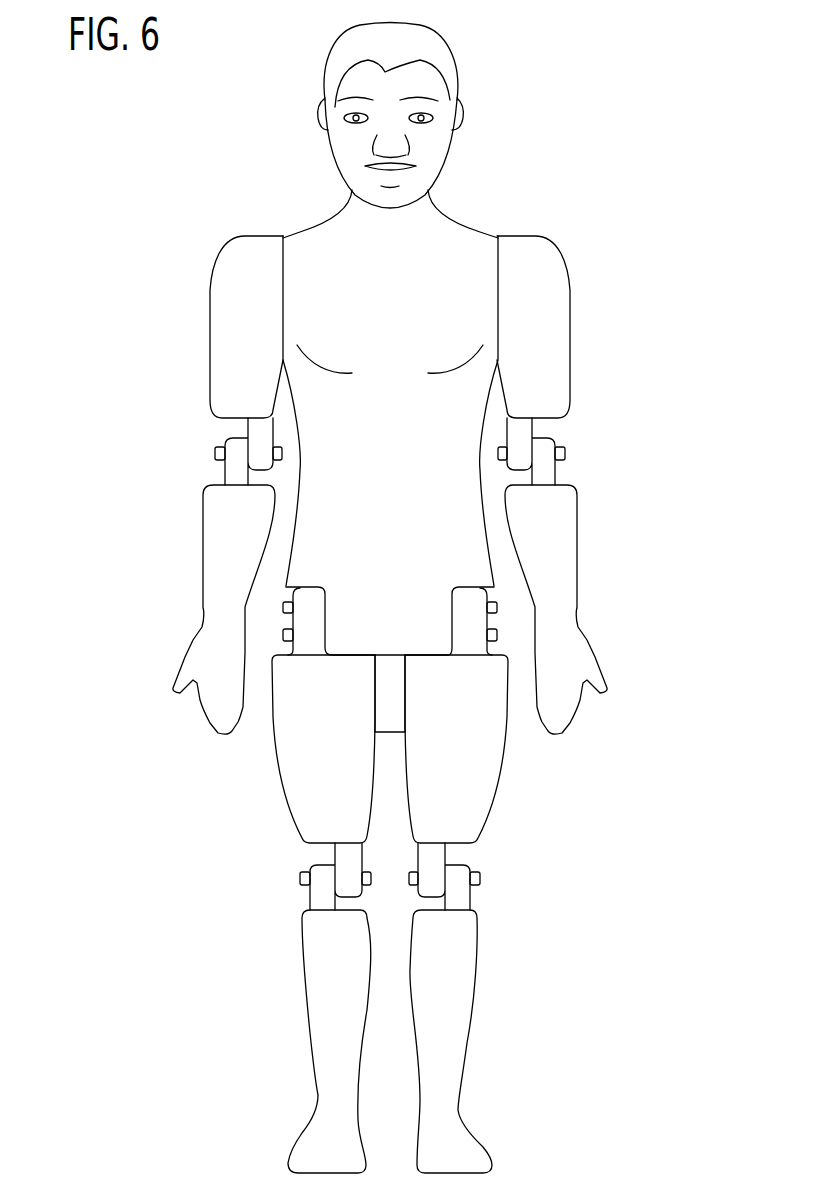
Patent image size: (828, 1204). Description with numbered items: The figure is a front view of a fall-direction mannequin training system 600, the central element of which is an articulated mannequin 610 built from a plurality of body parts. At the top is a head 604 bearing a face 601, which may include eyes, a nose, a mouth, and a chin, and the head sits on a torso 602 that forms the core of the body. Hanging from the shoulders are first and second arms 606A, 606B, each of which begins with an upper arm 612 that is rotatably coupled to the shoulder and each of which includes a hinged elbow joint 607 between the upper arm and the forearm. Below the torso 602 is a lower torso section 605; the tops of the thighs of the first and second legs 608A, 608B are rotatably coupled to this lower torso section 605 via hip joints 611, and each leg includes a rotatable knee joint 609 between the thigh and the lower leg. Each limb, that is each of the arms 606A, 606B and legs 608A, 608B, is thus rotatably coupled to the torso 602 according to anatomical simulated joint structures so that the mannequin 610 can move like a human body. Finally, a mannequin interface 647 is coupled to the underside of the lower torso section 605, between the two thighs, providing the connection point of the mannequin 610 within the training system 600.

The fall-direction mannequin training system 600 is at (612, 89).
The face 601 is at (420, 145).
The torso 602 is at (410, 318).
The head 604 is at (455, 78).
The lower torso section 605 is at (395, 615).
The first arm 606A is at (568, 354).
The second arm 606B is at (212, 354).
The hinged elbow joint 607 is at (238, 452).
The first leg 608A is at (460, 755).
The second leg 608B is at (320, 755).
The rotatable knee joint 609 is at (322, 883).
The mannequin 610 is at (543, 233).
The hip joint 611 is at (312, 630).
The upper arm 612 is at (243, 292).
The mannequin interface 647 is at (388, 690).